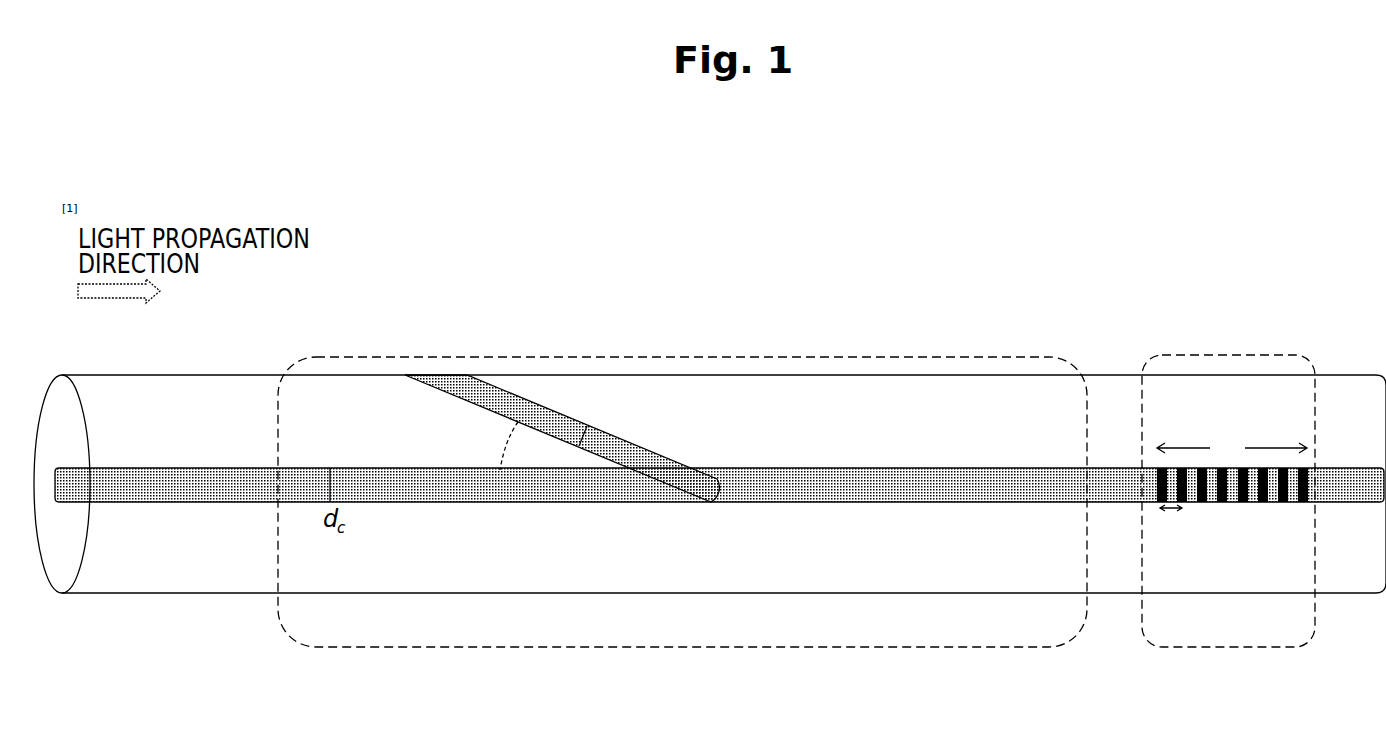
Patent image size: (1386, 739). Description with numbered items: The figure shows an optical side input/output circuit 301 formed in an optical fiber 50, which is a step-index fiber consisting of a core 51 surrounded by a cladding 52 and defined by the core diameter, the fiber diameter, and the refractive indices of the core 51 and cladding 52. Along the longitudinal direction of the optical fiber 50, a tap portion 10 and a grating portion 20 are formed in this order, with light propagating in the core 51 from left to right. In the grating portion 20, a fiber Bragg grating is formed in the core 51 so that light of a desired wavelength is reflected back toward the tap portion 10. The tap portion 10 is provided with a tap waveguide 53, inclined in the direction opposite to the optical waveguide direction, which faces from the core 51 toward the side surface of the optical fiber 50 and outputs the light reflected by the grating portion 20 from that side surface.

The tap portion 10 is at (705, 652).
The grating portion 20 is at (1222, 650).
The optical fiber 50 is at (152, 373).
The core 51 is at (136, 505).
The cladding 52 is at (168, 582).
The tap waveguide 53 is at (482, 397).
The optical side input/output circuit 301 is at (796, 458).